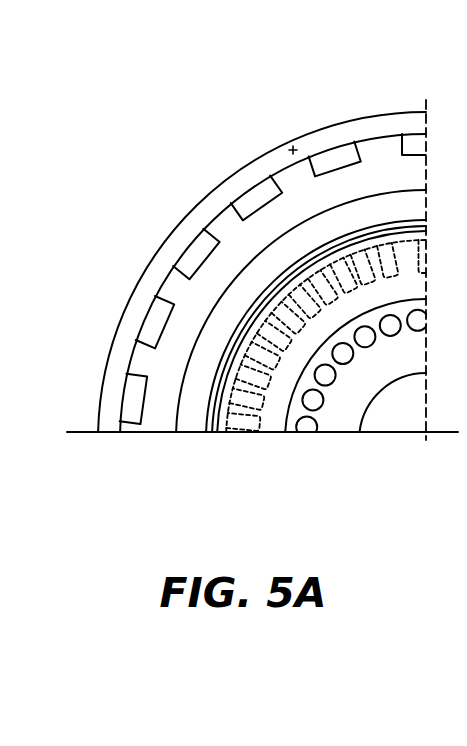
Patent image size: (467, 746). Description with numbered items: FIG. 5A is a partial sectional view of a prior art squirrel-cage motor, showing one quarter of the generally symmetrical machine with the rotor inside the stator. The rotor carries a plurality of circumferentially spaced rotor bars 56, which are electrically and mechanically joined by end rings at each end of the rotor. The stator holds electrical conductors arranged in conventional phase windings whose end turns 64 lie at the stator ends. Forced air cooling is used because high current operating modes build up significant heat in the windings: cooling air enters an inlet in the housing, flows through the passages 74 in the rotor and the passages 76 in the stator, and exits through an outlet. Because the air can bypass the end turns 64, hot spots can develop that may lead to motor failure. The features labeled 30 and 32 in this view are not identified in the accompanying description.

The axis / centerline of motor 30 is at (432, 260).
The stator slots 32 is at (313, 159).
The rotor bars 56 is at (258, 380).
The end turns 64 is at (187, 423).
The passages 74 is at (326, 377).
The passages 76 is at (323, 154).